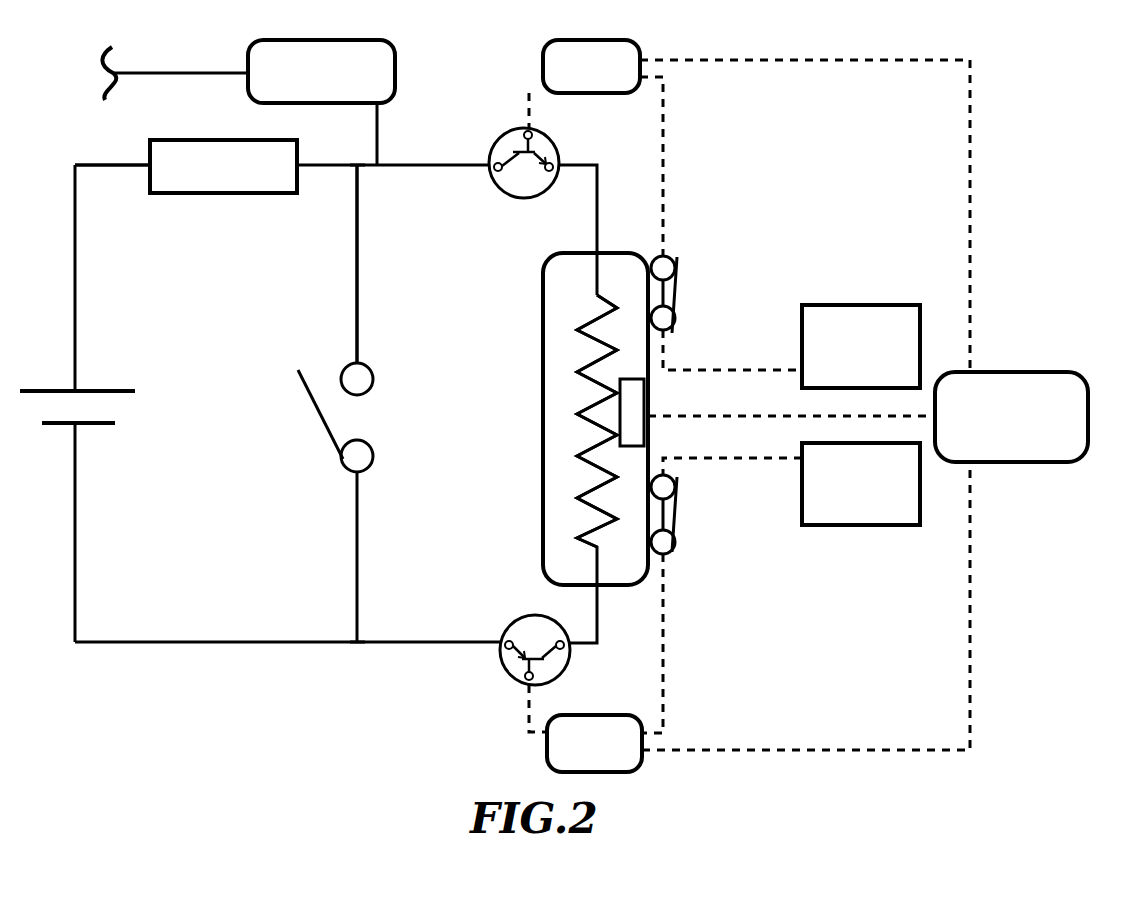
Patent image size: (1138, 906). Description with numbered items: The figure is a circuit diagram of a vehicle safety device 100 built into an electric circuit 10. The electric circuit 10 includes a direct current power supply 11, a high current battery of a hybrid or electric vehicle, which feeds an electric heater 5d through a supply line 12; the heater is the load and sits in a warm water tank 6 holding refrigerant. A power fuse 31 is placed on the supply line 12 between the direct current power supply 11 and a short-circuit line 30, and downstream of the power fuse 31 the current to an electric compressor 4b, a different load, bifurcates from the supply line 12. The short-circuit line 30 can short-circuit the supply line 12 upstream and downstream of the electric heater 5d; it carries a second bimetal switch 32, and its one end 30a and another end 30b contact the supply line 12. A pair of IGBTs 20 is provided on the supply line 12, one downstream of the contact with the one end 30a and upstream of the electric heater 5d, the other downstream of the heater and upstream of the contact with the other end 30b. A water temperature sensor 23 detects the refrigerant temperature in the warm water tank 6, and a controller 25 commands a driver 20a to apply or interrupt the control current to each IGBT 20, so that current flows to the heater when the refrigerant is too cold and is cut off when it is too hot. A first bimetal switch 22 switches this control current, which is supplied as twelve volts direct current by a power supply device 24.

The electric circuit 10 is at (66, 106).
The vehicle safety device 100 is at (1063, 130).
The electric compressor 4b is at (247, 60).
The direct current power supply 11 is at (60, 390).
The supply line 12 is at (116, 170).
The power fuse 31 is at (200, 193).
The short-circuit line 30 is at (357, 283).
The one end of the short-circuit line 30a is at (358, 170).
The another end of the short-circuit line 30b is at (357, 642).
The second bimetal switch 32 is at (308, 398).
The IGBT 20 is at (510, 128).
The driver 20a is at (543, 57).
The first bimetal switch 22 is at (677, 295).
The water temperature sensor 23 is at (617, 443).
The power supply device 24 is at (910, 305).
The controller 25 is at (1060, 372).
The electric heater 5d is at (593, 355).
The warm water tank 6 is at (543, 398).